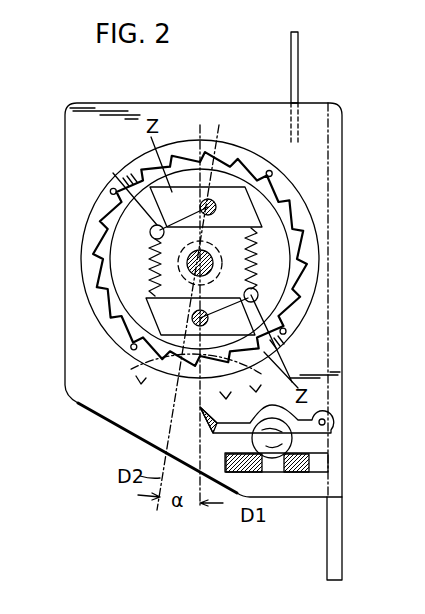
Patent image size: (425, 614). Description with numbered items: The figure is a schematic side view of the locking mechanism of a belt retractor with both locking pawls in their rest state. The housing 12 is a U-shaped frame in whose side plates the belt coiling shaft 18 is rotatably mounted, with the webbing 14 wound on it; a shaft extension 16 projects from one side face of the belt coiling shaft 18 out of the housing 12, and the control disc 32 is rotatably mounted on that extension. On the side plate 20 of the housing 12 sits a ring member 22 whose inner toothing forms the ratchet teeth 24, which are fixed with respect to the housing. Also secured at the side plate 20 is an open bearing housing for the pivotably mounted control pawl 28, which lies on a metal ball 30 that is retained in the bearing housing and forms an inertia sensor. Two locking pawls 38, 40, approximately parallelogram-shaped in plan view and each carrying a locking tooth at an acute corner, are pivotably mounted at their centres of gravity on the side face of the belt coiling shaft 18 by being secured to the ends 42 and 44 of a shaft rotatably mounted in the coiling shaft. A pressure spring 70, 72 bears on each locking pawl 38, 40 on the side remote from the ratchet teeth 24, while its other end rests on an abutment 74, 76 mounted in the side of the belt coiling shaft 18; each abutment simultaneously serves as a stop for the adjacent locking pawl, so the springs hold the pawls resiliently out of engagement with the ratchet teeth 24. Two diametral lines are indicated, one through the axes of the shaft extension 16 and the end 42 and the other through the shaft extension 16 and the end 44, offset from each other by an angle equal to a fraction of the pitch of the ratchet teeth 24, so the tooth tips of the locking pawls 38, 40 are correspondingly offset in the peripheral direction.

The housing 12 is at (337, 476).
The webbing 14 is at (298, 68).
The shaft extension 16 is at (250, 267).
The belt coiling shaft 18 is at (286, 203).
The side plate 20 is at (88, 409).
The ring member 22 is at (100, 346).
The ratchet teeth 24 is at (100, 262).
The control pawl 28 is at (203, 413).
The metal ball 30 is at (310, 438).
The control disc 32 is at (135, 432).
The locking pawl 38 is at (150, 379).
The locking pawl 40 is at (186, 186).
The shaft end (bearing pin) 42 is at (210, 318).
The shaft end (bearing pin) 44 is at (214, 203).
The pressure spring 70 is at (140, 280).
The pressure spring 72 is at (275, 270).
The abutment 74 is at (122, 205).
The abutment 76 is at (290, 335).